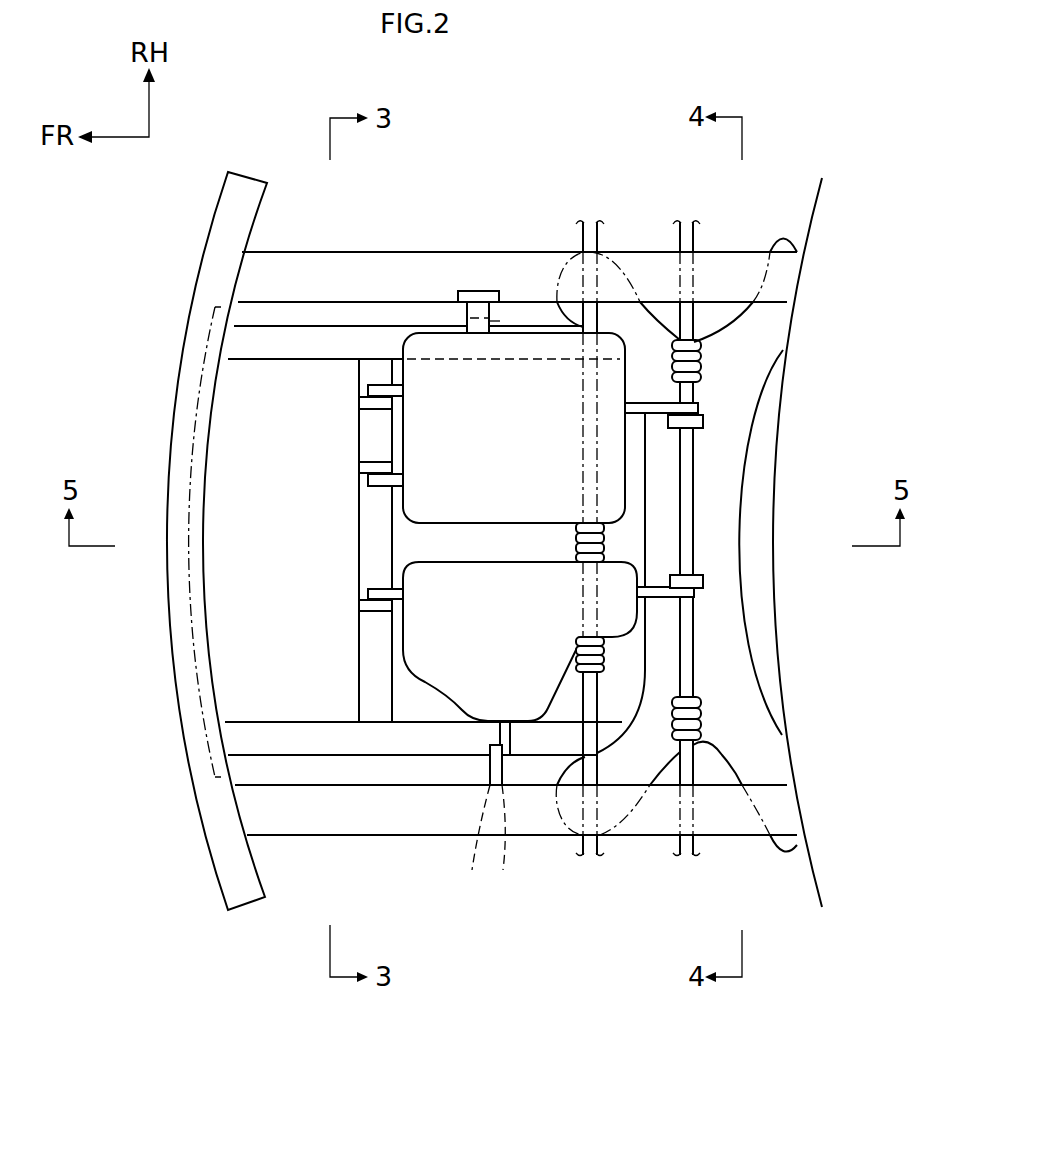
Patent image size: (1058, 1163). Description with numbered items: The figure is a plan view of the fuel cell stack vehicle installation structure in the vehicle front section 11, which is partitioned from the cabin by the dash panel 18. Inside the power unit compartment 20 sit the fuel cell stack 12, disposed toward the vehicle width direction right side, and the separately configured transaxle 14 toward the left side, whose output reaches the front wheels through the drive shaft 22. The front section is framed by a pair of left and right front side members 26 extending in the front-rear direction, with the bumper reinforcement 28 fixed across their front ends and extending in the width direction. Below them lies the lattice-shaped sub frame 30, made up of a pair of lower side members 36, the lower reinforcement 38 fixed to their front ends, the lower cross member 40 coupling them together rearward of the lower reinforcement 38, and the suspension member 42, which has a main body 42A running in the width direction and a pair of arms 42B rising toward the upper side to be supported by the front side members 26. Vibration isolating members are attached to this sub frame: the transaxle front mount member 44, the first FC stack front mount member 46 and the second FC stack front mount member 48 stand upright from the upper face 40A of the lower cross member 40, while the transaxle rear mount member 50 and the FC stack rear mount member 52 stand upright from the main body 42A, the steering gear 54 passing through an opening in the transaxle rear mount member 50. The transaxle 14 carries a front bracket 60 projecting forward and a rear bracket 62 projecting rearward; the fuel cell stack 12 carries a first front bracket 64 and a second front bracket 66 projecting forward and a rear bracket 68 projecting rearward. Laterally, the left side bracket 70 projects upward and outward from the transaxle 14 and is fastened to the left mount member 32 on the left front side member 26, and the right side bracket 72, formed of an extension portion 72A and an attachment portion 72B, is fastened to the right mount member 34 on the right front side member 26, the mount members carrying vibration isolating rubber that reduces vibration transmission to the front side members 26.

The vehicle front section 11 is at (516, 464).
The fuel cell stack 12 is at (403, 335).
The transaxle 14 is at (432, 697).
The dash panel 18 is at (803, 214).
The power unit compartment 20 is at (432, 527).
The drive shaft 22 is at (584, 848).
The front side members 26 is at (343, 252).
The bumper reinforcement 28 is at (176, 372).
The sub frame 30 is at (298, 318).
The left mount member 32 is at (492, 760).
The right mount member 34 is at (468, 292).
The lower side members 36 is at (258, 362).
The lower reinforcement 38 is at (192, 690).
The lower cross member 40 is at (337, 540).
The upper face 40A is at (368, 685).
The suspension member 42 is at (762, 558).
The main body 42A is at (732, 551).
The arms 42B is at (618, 262).
The transaxle front mount member 44 is at (359, 605).
The first FC stack front mount member 46 is at (359, 467).
The second FC stack front mount member 48 is at (359, 402).
The transaxle rear mount member 50 is at (703, 580).
The FC stack rear mount member 52 is at (703, 420).
The steering gear 54 is at (703, 700).
The front bracket 60 is at (368, 592).
The rear bracket 62 is at (655, 600).
The first front bracket 64 is at (368, 482).
The second front bracket 66 is at (368, 390).
The rear bracket 68 is at (698, 410).
The left side bracket 70 is at (508, 758).
The right side bracket 72 is at (486, 230).
The extension portion 72A is at (500, 321).
The attachment portion 72B is at (488, 318).